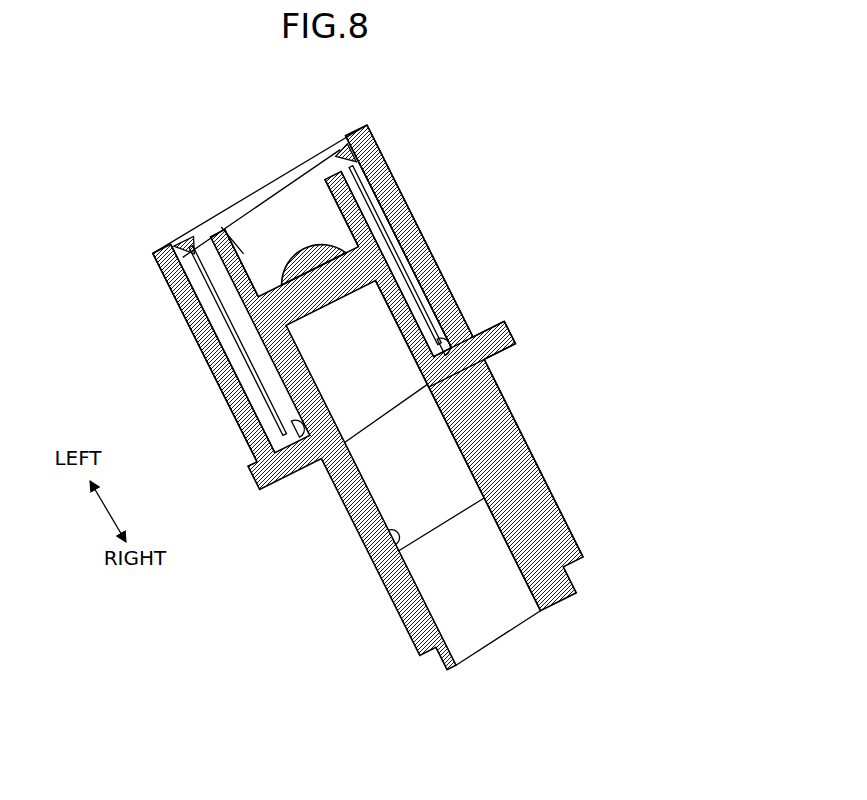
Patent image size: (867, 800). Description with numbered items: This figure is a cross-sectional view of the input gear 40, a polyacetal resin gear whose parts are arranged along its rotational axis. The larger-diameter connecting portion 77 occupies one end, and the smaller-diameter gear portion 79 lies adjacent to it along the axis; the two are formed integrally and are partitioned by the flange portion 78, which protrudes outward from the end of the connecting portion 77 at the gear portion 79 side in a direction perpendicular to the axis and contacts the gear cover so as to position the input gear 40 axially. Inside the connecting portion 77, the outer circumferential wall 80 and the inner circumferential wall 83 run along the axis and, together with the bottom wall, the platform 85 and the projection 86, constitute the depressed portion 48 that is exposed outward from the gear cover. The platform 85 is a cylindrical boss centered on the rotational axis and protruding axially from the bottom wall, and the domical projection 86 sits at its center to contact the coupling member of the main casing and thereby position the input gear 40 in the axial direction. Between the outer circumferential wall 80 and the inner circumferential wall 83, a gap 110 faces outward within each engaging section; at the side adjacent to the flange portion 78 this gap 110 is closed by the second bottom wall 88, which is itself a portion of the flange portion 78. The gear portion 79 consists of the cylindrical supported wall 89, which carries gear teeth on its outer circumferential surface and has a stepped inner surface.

The input gear 40 is at (430, 82).
The depressed portion 48 is at (268, 233).
The connecting portion 77 is at (494, 272).
The flange portion 78 is at (528, 328).
The gear portion 79 is at (548, 446).
The outer circumferential wall 80 is at (414, 228).
The inner circumferential wall 83 is at (375, 198).
The platform 85 is at (380, 246).
The projection 86 is at (244, 253).
The second bottom wall 88 is at (447, 340).
The supported wall 89 is at (395, 530).
The gap 110 is at (333, 158).